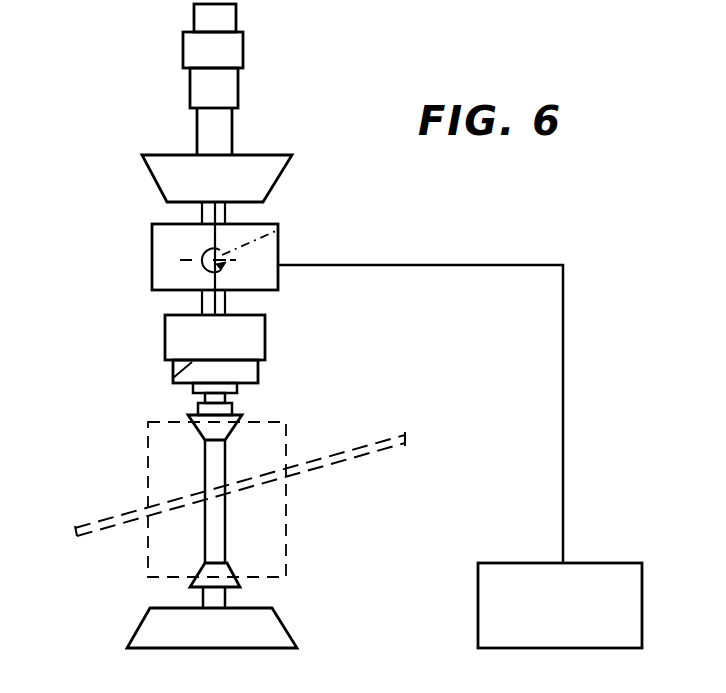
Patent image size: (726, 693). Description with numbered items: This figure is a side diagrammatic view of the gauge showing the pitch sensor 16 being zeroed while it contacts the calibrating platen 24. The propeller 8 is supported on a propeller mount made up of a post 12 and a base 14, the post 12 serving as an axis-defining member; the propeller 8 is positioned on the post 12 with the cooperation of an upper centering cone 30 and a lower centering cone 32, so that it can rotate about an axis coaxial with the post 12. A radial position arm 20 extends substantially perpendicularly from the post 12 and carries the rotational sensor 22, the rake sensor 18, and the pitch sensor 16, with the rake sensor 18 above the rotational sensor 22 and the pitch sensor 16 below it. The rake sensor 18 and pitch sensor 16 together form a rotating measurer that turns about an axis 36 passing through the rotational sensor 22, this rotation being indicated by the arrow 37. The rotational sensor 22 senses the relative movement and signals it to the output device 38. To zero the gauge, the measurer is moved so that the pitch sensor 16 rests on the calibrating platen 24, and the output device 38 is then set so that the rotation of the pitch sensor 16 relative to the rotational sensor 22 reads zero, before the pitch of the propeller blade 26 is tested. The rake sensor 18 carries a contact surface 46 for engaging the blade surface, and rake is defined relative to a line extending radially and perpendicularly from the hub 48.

The propeller 8 is at (128, 490).
The post 12 is at (225, 298).
The base 14 is at (196, 642).
The pitch sensor 16 is at (201, 351).
The rake sensor 18 is at (199, 189).
The radial position arm 20 is at (232, 50).
The rotational sensor 22 is at (165, 277).
The calibrating platen 24 is at (253, 372).
The propeller blade 26 is at (347, 458).
The upper centering cone 30 is at (223, 425).
The lower centering cone 32 is at (220, 573).
The axis 36 is at (277, 229).
The arrow 37 is at (204, 248).
The output device 38 is at (546, 619).
The contact surface 46 is at (174, 378).
The hub 48 is at (270, 525).